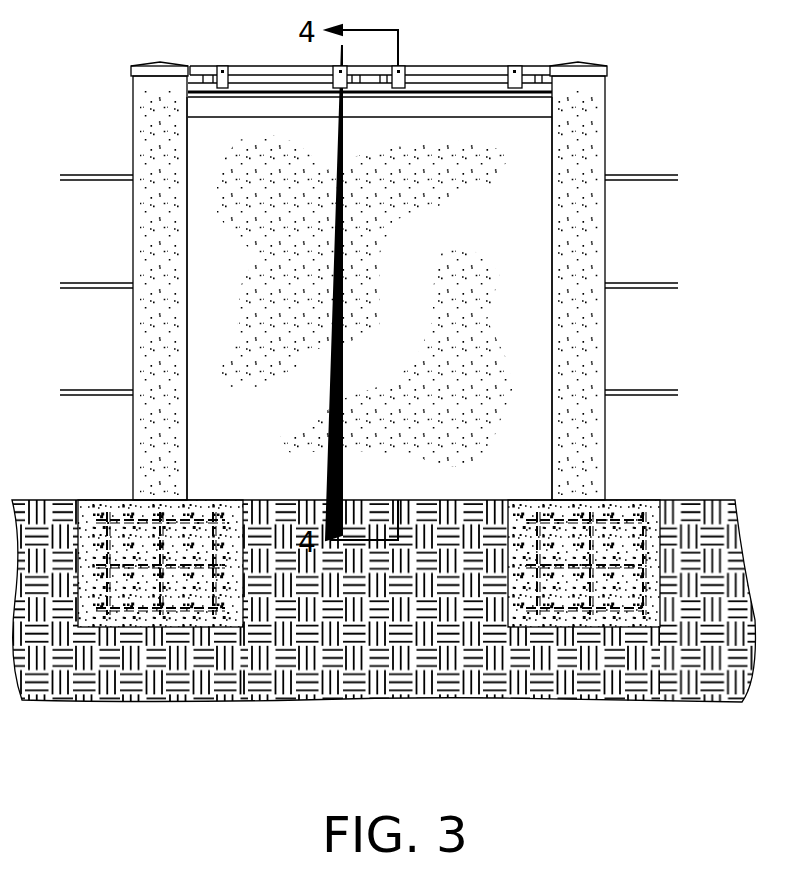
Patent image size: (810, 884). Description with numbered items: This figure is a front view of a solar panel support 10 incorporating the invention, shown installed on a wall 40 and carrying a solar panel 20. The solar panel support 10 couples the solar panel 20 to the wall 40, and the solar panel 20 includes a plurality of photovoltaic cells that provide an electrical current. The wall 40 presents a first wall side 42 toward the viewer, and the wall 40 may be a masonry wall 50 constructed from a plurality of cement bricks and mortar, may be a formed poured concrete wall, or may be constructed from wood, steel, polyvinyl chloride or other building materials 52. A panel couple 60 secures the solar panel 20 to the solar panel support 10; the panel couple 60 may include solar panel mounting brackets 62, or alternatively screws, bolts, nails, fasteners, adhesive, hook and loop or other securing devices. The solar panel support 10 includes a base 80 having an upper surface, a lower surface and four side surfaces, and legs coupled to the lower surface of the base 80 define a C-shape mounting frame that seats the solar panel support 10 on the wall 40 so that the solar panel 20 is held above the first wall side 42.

The solar panel support 10 is at (203, 100).
The solar panel 20 is at (452, 70).
The wall 40 is at (540, 149).
The first wall side 42 is at (533, 240).
The masonry wall 50 is at (218, 240).
The other building materials 52 is at (210, 352).
The panel couple 60 is at (535, 88).
The solar panel mounting brackets 62 is at (515, 73).
The base 80 is at (275, 90).